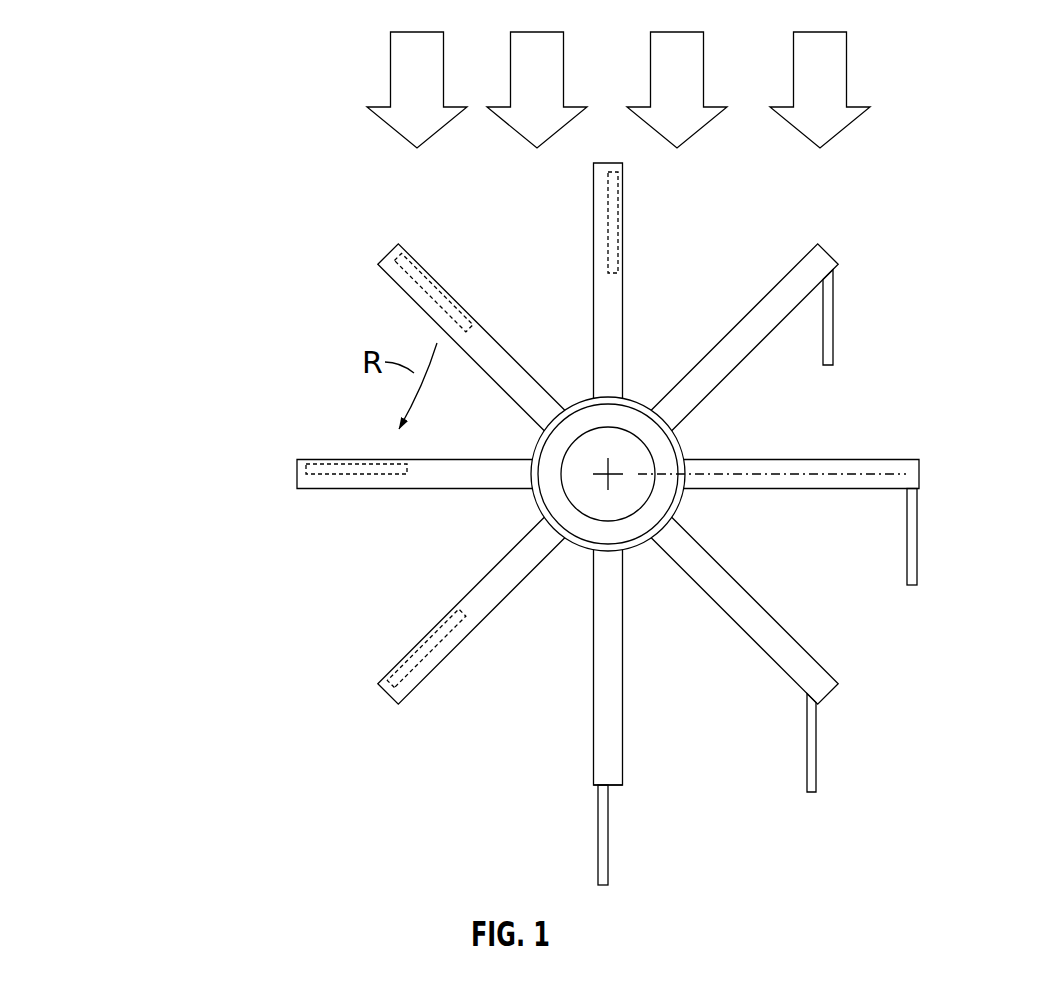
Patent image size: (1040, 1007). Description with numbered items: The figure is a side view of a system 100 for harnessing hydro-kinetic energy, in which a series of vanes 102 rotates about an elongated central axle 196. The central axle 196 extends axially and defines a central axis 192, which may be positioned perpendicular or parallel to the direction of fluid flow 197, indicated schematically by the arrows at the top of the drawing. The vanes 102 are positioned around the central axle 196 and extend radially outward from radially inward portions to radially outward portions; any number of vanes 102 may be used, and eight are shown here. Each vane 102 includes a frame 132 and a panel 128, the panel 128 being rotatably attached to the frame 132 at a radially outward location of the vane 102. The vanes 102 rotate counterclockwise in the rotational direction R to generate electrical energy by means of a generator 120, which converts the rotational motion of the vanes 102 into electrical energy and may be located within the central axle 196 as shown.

The system 100 is at (127, 411).
The vane 102 is at (579, 194).
The generator 120 is at (652, 460).
The panel 128 is at (598, 848).
The frame 132 is at (625, 772).
The central axis 192 is at (608, 478).
The central axle 196 is at (532, 497).
The direction of fluid flow 197 is at (437, 101).